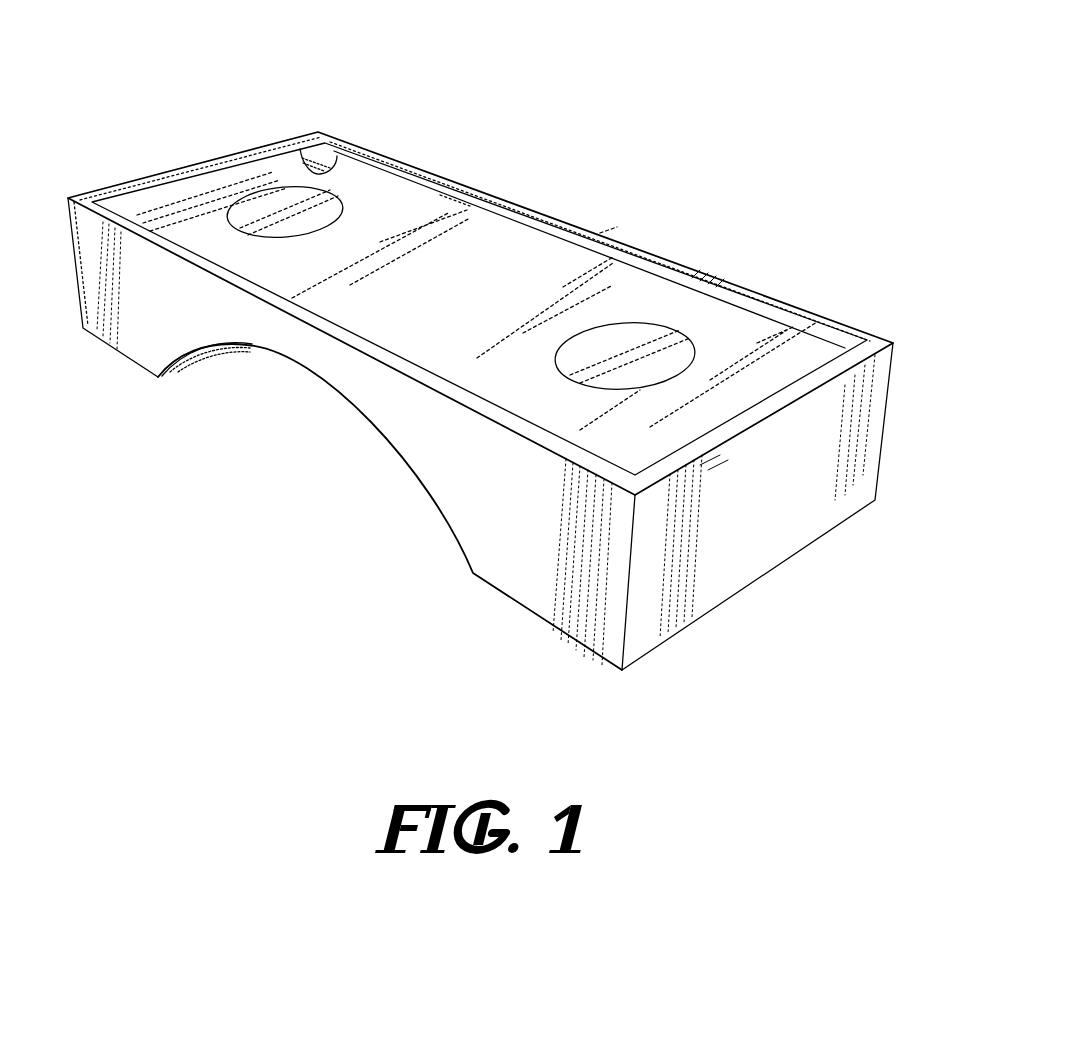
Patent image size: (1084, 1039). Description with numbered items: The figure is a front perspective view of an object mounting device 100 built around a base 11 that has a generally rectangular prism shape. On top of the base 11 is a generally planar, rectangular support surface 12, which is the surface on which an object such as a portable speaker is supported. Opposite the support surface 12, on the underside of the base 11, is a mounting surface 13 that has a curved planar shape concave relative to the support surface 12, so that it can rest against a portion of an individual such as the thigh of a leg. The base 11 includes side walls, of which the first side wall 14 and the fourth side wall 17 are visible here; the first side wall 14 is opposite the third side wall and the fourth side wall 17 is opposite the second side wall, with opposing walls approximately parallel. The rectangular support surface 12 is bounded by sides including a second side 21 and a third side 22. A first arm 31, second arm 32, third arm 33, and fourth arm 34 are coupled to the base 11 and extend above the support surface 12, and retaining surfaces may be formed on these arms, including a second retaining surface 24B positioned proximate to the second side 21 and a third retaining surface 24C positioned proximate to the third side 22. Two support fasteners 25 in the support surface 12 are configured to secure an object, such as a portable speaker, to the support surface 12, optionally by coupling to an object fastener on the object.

The object mounting device 100 is at (547, 84).
The base 11 is at (895, 343).
The support surface 12 is at (506, 244).
The mounting surface 13 is at (219, 362).
The first side wall 14 is at (493, 452).
The fourth side wall 17 is at (743, 503).
The second side 21 is at (211, 182).
The third side 22 is at (657, 282).
The second retaining surface 24B is at (283, 153).
The third retaining surface 24C is at (420, 192).
The support fastener 25 is at (318, 222).
The first arm 31 is at (395, 354).
The second arm 32 is at (119, 184).
The third arm 33 is at (600, 233).
The fourth arm 34 is at (763, 408).